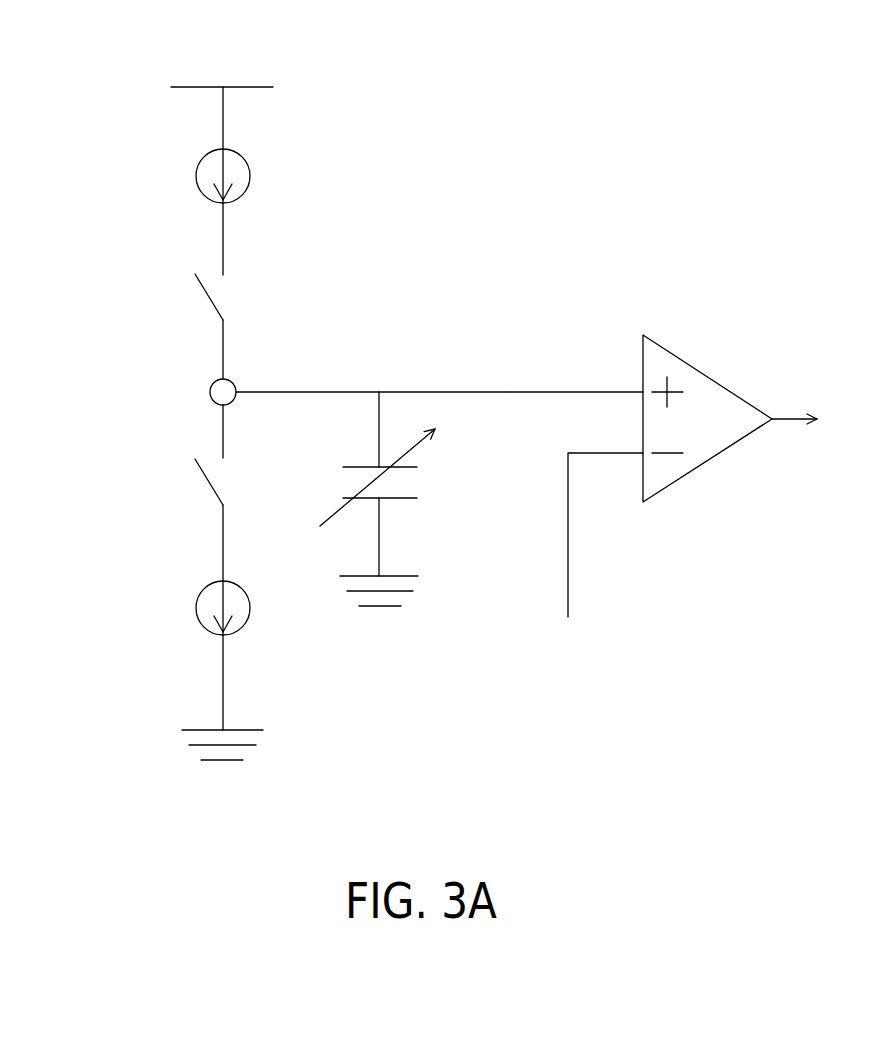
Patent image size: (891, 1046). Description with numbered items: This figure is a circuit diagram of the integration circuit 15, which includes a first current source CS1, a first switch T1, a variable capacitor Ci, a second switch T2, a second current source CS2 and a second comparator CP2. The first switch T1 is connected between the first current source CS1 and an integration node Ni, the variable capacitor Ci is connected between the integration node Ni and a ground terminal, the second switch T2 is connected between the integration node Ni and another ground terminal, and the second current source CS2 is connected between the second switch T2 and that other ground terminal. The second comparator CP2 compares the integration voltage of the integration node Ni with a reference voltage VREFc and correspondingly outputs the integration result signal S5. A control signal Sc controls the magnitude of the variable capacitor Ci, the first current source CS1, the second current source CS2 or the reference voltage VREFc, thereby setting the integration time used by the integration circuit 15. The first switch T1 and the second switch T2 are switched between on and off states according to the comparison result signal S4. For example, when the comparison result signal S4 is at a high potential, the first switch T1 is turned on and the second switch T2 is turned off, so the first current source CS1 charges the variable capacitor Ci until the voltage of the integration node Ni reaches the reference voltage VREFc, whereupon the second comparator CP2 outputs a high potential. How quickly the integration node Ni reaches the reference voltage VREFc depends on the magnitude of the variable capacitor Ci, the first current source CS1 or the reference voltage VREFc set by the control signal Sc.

The integration circuit 15 is at (576, 207).
The first current source CS1 is at (187, 212).
The second current source CS2 is at (194, 670).
The first switch T1 is at (235, 326).
The second switch T2 is at (235, 520).
The integration node Ni is at (405, 417).
The variable capacitor Ci is at (366, 499).
The second comparator CP2 is at (710, 377).
The comparison result signal S4 is at (185, 299).
The control signal Sc is at (263, 176).
The integration result signal S5 is at (813, 420).
The reference voltage VREFc is at (585, 555).